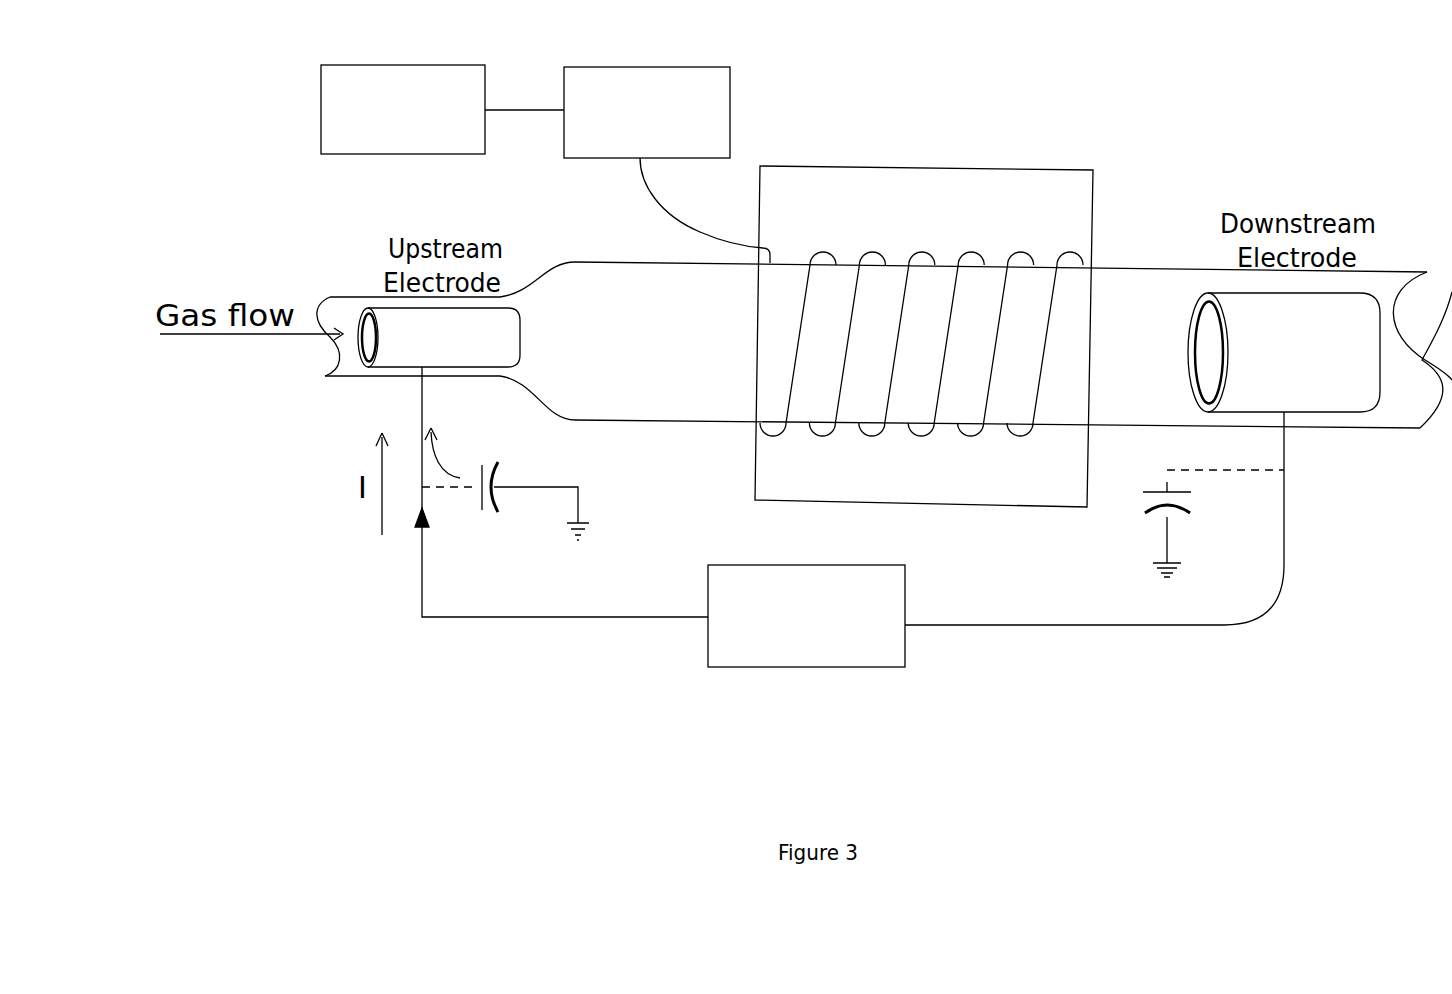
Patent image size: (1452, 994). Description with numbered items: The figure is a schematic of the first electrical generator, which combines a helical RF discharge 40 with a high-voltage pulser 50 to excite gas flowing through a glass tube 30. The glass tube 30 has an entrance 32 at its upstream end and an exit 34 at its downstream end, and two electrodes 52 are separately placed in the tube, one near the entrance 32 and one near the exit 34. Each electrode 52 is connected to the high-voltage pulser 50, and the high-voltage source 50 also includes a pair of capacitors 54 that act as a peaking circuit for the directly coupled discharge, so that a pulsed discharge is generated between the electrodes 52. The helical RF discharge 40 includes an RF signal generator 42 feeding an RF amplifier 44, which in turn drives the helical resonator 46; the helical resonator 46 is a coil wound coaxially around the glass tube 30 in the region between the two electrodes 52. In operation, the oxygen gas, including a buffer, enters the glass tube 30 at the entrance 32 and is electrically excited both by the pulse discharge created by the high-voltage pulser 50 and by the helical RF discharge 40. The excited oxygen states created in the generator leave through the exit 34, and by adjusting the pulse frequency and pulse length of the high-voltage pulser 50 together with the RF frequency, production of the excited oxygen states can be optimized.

The glass tube 30 is at (700, 423).
The entrance 32 is at (317, 365).
The exit 34 is at (1428, 289).
The helical RF discharge 40 is at (951, 150).
The RF signal generator 42 is at (358, 154).
The RF amplifier 44 is at (730, 100).
The helical resonator 46 is at (1084, 265).
The high-voltage pulser 50 is at (815, 667).
The electrodes 52 is at (392, 352).
The capacitors 54 is at (487, 515).